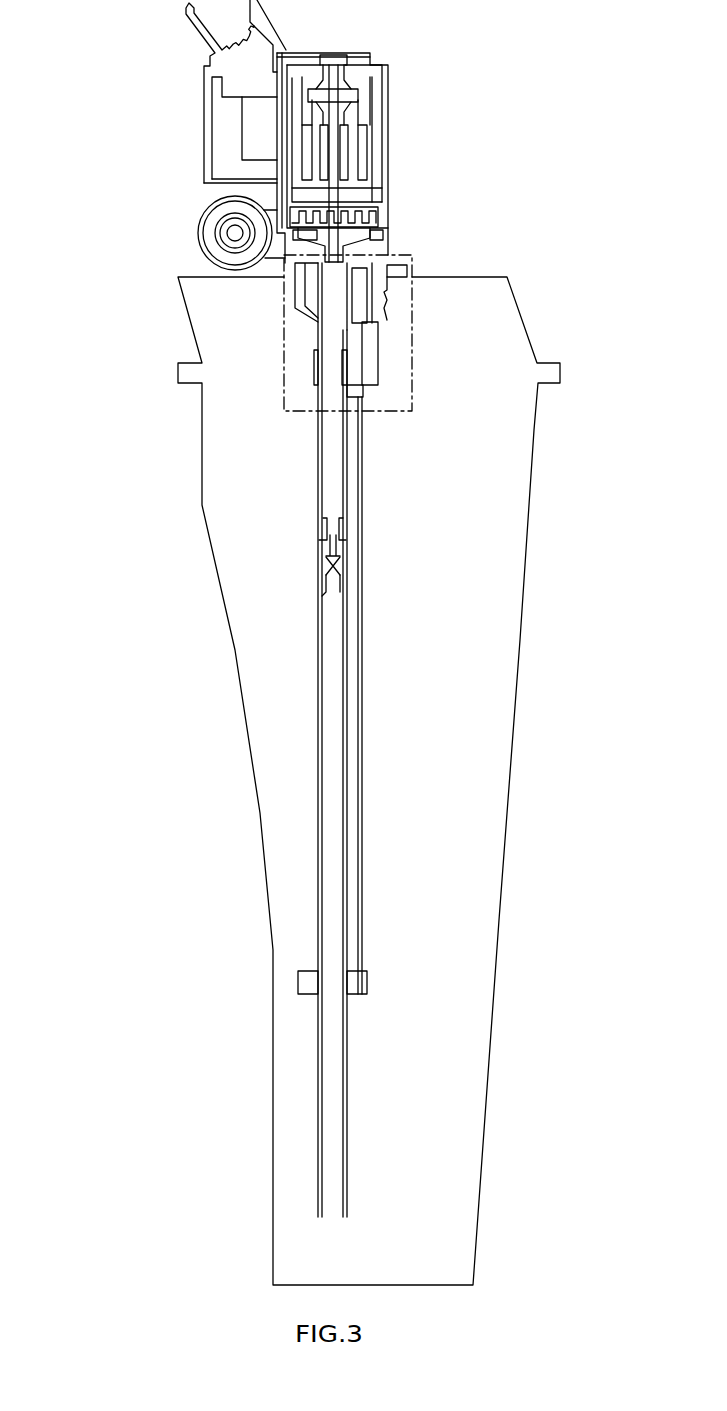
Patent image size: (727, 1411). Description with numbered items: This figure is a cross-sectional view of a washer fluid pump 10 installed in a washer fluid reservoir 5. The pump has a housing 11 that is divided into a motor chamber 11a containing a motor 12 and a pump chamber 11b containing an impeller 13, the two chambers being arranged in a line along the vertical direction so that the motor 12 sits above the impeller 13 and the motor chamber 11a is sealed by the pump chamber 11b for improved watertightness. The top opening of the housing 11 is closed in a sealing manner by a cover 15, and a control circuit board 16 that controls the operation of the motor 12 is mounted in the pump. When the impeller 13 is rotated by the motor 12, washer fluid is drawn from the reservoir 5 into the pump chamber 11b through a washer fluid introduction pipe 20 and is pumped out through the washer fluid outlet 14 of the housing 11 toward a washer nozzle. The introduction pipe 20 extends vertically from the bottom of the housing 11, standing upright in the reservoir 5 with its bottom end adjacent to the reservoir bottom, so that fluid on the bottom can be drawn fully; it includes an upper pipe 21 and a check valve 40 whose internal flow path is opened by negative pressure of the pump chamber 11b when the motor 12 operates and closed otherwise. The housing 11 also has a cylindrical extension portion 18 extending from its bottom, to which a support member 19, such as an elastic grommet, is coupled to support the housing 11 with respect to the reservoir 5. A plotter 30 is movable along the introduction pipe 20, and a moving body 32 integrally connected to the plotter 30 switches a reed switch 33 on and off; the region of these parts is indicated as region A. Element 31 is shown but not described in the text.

The washer fluid pump 10 is at (60, 96).
The washer fluid reservoir 5 is at (533, 480).
The control circuit board 16 is at (273, 78).
The cover 15 is at (383, 68).
The housing 11 is at (367, 177).
The motor chamber 11a is at (372, 157).
The pump chamber 11b is at (377, 240).
The motor 12 is at (361, 113).
The impeller 13 is at (320, 240).
The washer fluid outlet 14 is at (236, 234).
The support member 19 is at (409, 272).
The extension portion 18 is at (316, 330).
The moving body 32 is at (362, 293).
The reed switch 33 is at (373, 365).
The washer fluid introduction pipe 20 is at (253, 740).
The upper pipe 21 is at (318, 463).
The check valve 40 is at (323, 557).
The sensor tube 31 is at (362, 620).
The plotter 30 is at (368, 978).
The detail region A is at (284, 403).